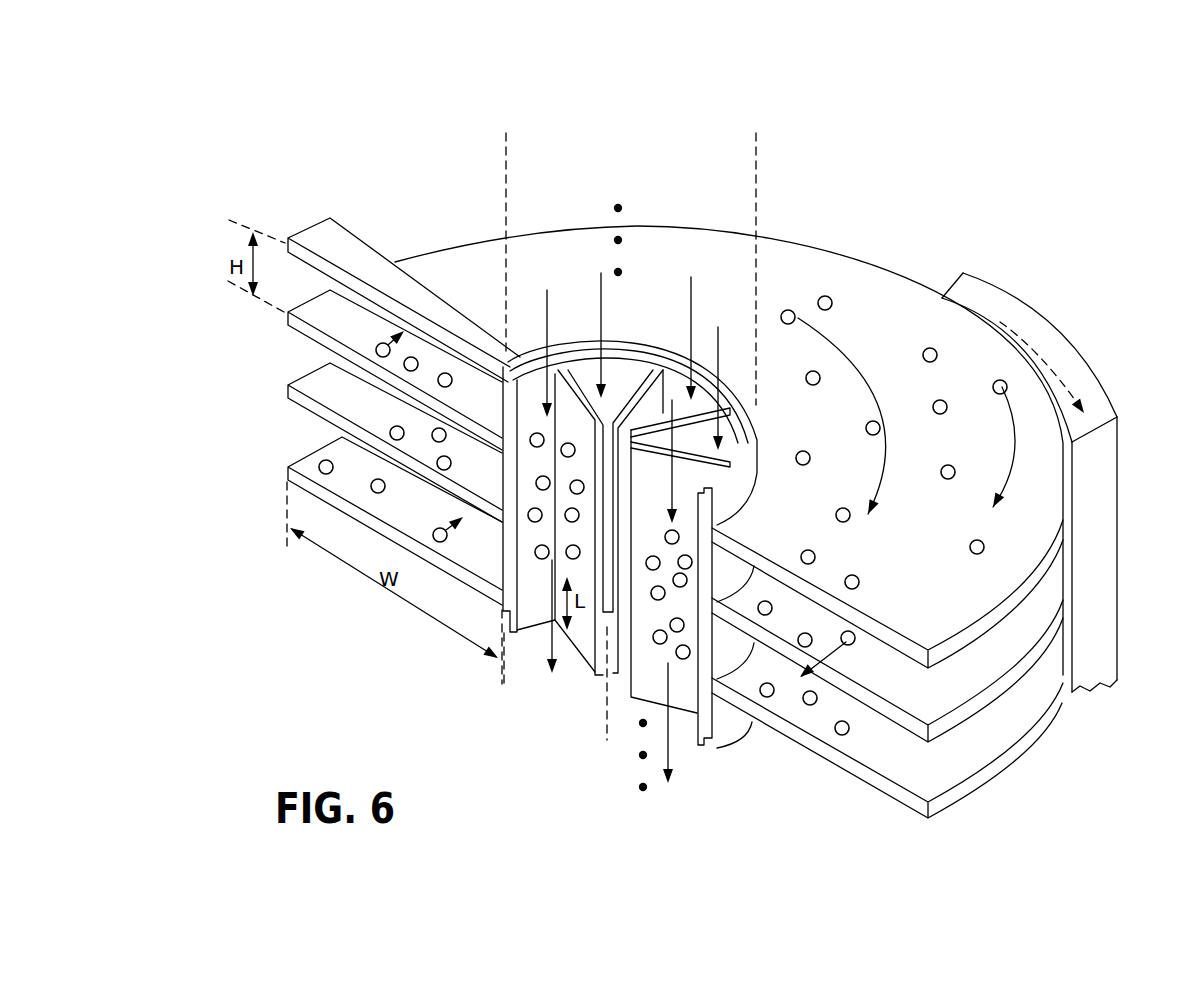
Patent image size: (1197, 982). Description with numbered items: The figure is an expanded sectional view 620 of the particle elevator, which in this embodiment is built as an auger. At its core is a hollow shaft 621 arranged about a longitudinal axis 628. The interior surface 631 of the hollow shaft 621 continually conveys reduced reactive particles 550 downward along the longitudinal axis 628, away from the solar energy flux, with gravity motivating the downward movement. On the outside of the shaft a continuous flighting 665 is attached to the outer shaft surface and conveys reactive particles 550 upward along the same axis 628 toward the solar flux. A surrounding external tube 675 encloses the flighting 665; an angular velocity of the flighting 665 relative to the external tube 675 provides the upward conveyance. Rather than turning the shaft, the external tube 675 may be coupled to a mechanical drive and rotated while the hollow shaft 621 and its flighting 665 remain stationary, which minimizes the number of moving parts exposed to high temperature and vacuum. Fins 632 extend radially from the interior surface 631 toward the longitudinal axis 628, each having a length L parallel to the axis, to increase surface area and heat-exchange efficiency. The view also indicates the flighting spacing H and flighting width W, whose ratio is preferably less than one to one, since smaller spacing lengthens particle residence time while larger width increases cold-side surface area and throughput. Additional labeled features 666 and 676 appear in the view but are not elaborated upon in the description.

The expanded sectional view 620 is at (180, 188).
The hollow shaft 621 is at (757, 133).
The reactive particles 550 is at (830, 298).
The flow channel along outer wall 676 is at (1047, 350).
The external tube 675 is at (1122, 440).
The perforated plate layer 666 is at (322, 356).
The continuous flighting 665 is at (286, 465).
The interior surface 631 is at (530, 613).
The fins 632 is at (576, 660).
The longitudinal axis 628 is at (607, 723).